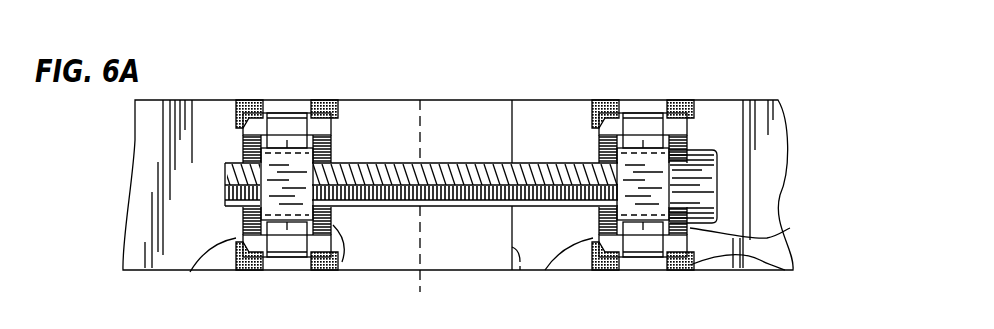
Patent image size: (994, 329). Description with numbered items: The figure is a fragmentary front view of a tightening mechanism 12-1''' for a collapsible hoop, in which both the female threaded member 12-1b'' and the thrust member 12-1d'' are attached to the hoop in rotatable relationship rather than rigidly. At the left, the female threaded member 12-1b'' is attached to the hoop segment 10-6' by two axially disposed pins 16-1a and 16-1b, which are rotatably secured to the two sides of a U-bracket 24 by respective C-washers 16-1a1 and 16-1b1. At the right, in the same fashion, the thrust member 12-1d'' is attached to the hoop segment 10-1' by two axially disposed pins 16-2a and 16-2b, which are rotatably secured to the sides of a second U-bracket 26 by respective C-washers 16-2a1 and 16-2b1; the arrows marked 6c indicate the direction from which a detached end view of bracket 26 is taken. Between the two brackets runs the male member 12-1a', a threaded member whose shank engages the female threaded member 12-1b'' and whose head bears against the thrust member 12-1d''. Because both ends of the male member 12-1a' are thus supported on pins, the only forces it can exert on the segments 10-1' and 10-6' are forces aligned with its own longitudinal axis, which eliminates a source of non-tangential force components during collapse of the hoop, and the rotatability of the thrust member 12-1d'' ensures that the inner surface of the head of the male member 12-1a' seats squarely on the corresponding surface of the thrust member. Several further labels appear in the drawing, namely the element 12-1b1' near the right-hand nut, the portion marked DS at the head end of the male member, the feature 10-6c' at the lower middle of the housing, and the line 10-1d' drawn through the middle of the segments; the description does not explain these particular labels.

The segment 10-6' is at (204, 157).
The C-washer 16-1a1 is at (257, 100).
The pin 16-1a is at (337, 123).
The tightening mechanism 12-1''' is at (458, 145).
The male member 12-1a' is at (421, 136).
The thrust member 12-1d'' is at (642, 107).
The C-washer 16-2a1 is at (673, 118).
The pin 16-2a is at (685, 115).
The right nut 12-1b1' is at (731, 126).
The segment 10-1' is at (793, 171).
The drive socket DS is at (707, 190).
The pin 16-2b is at (790, 228).
The C-washer 16-2b1 is at (786, 270).
The end view line 6c is at (572, 320).
The U-bracket 26 is at (545, 270).
The housing lip 10-6c' is at (490, 275).
The housing parting line 10-1d' is at (422, 210).
The pin 16-1b is at (342, 262).
The C-washer 16-1b1 is at (244, 270).
The U-bracket 24 is at (190, 272).
The female threaded member 12-1b'' is at (195, 179).